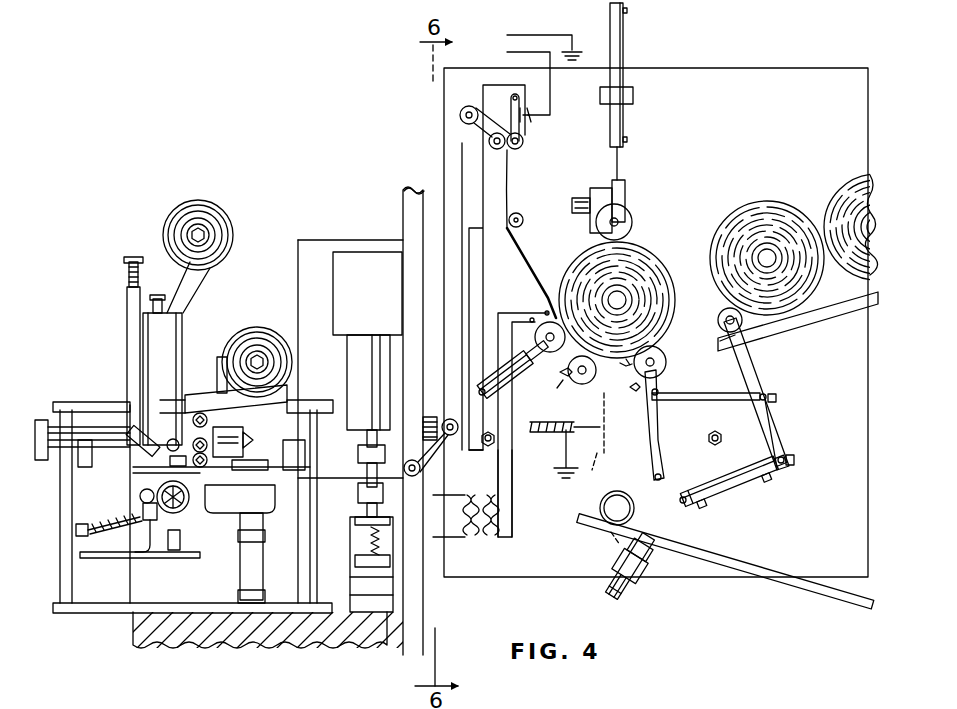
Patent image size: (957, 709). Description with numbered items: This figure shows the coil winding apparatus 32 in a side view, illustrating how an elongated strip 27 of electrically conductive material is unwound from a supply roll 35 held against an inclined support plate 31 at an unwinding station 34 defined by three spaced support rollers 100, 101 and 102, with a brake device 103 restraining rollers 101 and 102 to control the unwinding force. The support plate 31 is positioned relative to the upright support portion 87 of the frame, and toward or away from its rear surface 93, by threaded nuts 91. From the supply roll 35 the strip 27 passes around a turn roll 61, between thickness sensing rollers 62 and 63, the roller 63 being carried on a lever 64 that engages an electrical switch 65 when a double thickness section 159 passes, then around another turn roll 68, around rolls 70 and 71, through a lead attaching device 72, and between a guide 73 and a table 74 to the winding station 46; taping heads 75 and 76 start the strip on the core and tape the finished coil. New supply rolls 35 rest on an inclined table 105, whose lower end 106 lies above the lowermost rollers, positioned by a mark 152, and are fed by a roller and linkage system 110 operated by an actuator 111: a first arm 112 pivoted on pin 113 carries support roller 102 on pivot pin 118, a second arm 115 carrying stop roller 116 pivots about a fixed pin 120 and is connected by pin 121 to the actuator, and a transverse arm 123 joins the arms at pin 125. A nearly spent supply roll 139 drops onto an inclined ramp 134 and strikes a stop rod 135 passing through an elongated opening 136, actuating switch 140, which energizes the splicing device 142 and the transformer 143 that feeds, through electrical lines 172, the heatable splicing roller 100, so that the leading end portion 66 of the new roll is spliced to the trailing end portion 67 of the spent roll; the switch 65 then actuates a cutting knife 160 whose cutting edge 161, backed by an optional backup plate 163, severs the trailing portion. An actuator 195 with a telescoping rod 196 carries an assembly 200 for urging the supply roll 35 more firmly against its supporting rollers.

The support plate 31 is at (770, 70).
The coil winding apparatus 32 is at (343, 165).
The actuator 195 is at (622, 52).
The telescoping rod 196 is at (620, 165).
The assembly 200 is at (636, 207).
The electrical switch 65 is at (533, 115).
The lever 64 is at (523, 127).
The thickness sensing roller 63 is at (524, 143).
The thickness sensing roller 62 is at (503, 149).
The leading end portion 66 is at (510, 182).
The turn roll 61 is at (520, 213).
The turn roll 68 is at (459, 116).
The elongated strip material 27 is at (462, 143).
The rear surface 93 is at (424, 203).
The upright support portion 87 is at (402, 208).
The trailing end portion 67 is at (512, 244).
The double thickness section 159 is at (524, 248).
The supply roll 35 is at (640, 258).
The mark 152 is at (784, 200).
The inclined table 105 is at (815, 318).
The roller 116 is at (722, 312).
The lower end 106 is at (720, 345).
The pivot pin 118 is at (662, 372).
The support roller 102 is at (665, 368).
The fixed pivot pin 120 is at (753, 378).
The pivot pin 125 is at (766, 397).
The second arm 115 is at (770, 427).
The pin 121 is at (787, 460).
The transverse arm 123 is at (712, 400).
The first arm 112 is at (661, 447).
The pivot pin 113 is at (663, 471).
The roller and linkage system 110 is at (788, 482).
The actuator 111 is at (735, 490).
The inclined ramp 134 is at (730, 575).
The stop rod 135 is at (636, 522).
The nearly spent supply roll 139 is at (600, 508).
The elongated opening 136 is at (612, 538).
The electrical switch 140 is at (645, 570).
The splicing device 142 is at (535, 316).
The splicing roller 100 is at (556, 375).
The support roller 101 is at (580, 385).
The brake device 103 is at (558, 380).
The unwinding station 34 is at (611, 383).
The backup plate 163 is at (620, 466).
The cutting edge 161 is at (580, 430).
The cutting knife 160 is at (549, 456).
The roll 70 is at (470, 445).
The roll 71 is at (420, 470).
The lead attaching device 72 is at (357, 483).
The electrical lines 172 is at (514, 505).
The electrical transformer 143 is at (483, 542).
The threaded nuts 91 is at (433, 417).
The taping head means 76 is at (148, 374).
The taping head means 75 is at (280, 415).
The combination guide means and bearing surface means 73 is at (252, 472).
The table 74 is at (262, 490).
The winding station 46 is at (152, 484).